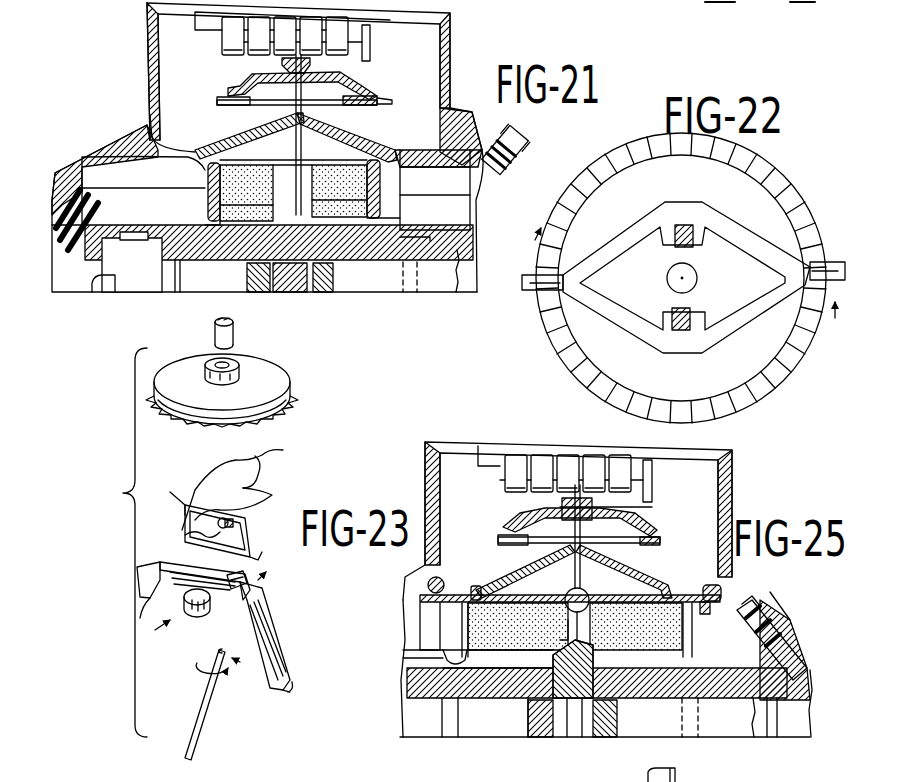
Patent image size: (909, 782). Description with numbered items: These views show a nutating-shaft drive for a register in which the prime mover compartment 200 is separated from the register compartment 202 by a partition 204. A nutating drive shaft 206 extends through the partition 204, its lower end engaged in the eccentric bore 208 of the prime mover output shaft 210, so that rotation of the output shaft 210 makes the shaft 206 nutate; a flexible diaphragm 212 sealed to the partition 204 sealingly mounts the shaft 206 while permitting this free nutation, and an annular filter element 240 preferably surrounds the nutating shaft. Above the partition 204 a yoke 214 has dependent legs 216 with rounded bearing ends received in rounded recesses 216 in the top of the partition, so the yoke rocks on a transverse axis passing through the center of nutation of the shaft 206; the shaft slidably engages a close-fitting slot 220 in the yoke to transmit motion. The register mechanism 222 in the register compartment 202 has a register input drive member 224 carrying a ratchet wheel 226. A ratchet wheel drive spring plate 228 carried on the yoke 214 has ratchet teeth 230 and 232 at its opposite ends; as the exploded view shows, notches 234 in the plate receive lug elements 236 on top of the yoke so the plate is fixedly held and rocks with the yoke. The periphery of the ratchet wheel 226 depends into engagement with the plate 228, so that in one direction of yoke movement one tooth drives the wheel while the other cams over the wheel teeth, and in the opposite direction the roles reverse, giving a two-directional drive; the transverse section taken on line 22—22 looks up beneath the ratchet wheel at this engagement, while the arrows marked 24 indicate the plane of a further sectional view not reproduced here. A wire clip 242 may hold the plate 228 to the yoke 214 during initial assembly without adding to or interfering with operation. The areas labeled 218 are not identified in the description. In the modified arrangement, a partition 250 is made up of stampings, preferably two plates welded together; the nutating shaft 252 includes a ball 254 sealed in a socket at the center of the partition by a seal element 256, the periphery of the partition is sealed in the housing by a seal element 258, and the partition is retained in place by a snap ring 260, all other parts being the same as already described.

In FIG. 21, the prime mover compartment 200 is at (488, 148).
In FIG. 25, the prime mover compartment 200 is at (765, 660).
In FIG. 21, the register compartment 202 is at (442, 56).
In FIG. 25, the register compartment 202 is at (715, 460).
In FIG. 21, the partition 204 is at (426, 166).
In FIG. 21, the nutating drive shaft 206 is at (246, 193).
In FIG. 23, the nutating drive shaft 206 is at (212, 716).
In FIG. 21, the eccentric bore 208 is at (339, 191).
In FIG. 25, the eccentric bore 208 is at (548, 650).
In FIG. 21, the prime mover output shaft 210 is at (339, 210).
In FIG. 25, the prime mover output shaft 210 is at (620, 660).
In FIG. 21, the diaphragm 212 is at (246, 212).
In FIG. 21, the yoke 214 is at (150, 110).
In FIG. 23, the yoke 214 is at (250, 620).
In FIG. 25, the yoke 214 is at (500, 572).
In FIG. 21, the dependent legs 216 is at (150, 120).
In FIG. 23, the dependent legs 216 is at (140, 620).
In FIG. 25, the dependent legs 216 is at (472, 590).
In FIG. 21, the chamber 218 is at (200, 170).
In FIG. 21, the slot 220 is at (297, 92).
In FIG. 23, the slot 220 is at (215, 612).
In FIG. 25, the slot 220 is at (568, 552).
In FIG. 21, the register mechanism 222 is at (372, 43).
In FIG. 22, the register mechanism 222 is at (601, 425).
In FIG. 25, the register mechanism 222 is at (604, 458).
In FIG. 22, the register input drive member 224 is at (698, 282).
In FIG. 23, the register input drive member 224 is at (236, 330).
In FIG. 25, the register input drive member 224 is at (626, 483).
In FIG. 21, the ratchet wheel 226 is at (378, 98).
In FIG. 22, the ratchet wheel 226 is at (792, 380).
In FIG. 23, the ratchet wheel 226 is at (292, 384).
In FIG. 21, the ratchet wheel drive spring plate 228 is at (372, 98).
In FIG. 22, the ratchet wheel drive spring plate 228 is at (614, 250).
In FIG. 23, the ratchet wheel drive spring plate 228 is at (232, 526).
In FIG. 25, the ratchet wheel drive spring plate 228 is at (662, 532).
In FIG. 21, the ratchet tooth 230 is at (224, 97).
In FIG. 22, the ratchet tooth 230 is at (540, 287).
In FIG. 23, the ratchet tooth 230 is at (170, 492).
In FIG. 21, the ratchet tooth 232 is at (386, 103).
In FIG. 22, the ratchet tooth 232 is at (807, 307).
In FIG. 23, the ratchet tooth 232 is at (258, 556).
In FIG. 23, the notches 234 is at (245, 490).
In FIG. 23, the lug elements 236 is at (256, 580).
In FIG. 21, the annular filter element 240 is at (393, 204).
In FIG. 23, the wire clip 242 is at (283, 450).
In FIG. 25, the wire clip 242 is at (580, 524).
In FIG. 25, the partition 250 is at (626, 618).
In FIG. 25, the nutating shaft 252 is at (560, 612).
In FIG. 25, the ball 254 is at (587, 592).
In FIG. 25, the seal element 256 is at (599, 631).
In FIG. 25, the seal element 258 is at (722, 598).
In FIG. 25, the snap ring 260 is at (705, 614).
In FIG. 21, the section line 22— 22 is at (170, 98).
In FIG. 21, the section line 24 is at (316, 65).